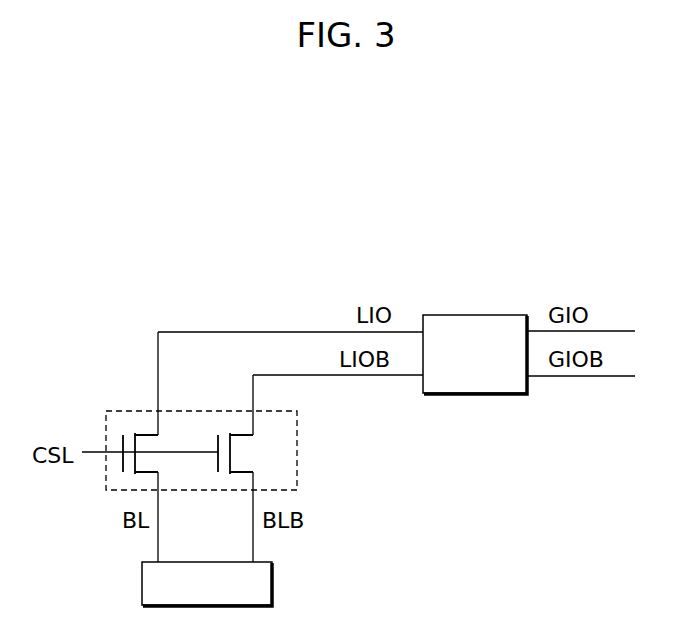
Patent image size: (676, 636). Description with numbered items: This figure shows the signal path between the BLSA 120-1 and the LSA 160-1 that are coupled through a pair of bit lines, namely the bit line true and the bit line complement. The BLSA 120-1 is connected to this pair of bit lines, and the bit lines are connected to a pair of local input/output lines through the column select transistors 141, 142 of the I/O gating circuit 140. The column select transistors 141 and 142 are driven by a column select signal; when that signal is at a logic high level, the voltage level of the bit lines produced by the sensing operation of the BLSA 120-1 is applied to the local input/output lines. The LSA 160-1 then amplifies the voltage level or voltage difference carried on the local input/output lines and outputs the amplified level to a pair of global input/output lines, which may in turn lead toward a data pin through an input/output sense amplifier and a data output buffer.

The I/O gating circuit 140 is at (298, 452).
The column select transistor 141 is at (165, 450).
The column select transistor 142 is at (253, 453).
The LSA 160-1 is at (475, 315).
The BLSA 120-1 is at (272, 583).